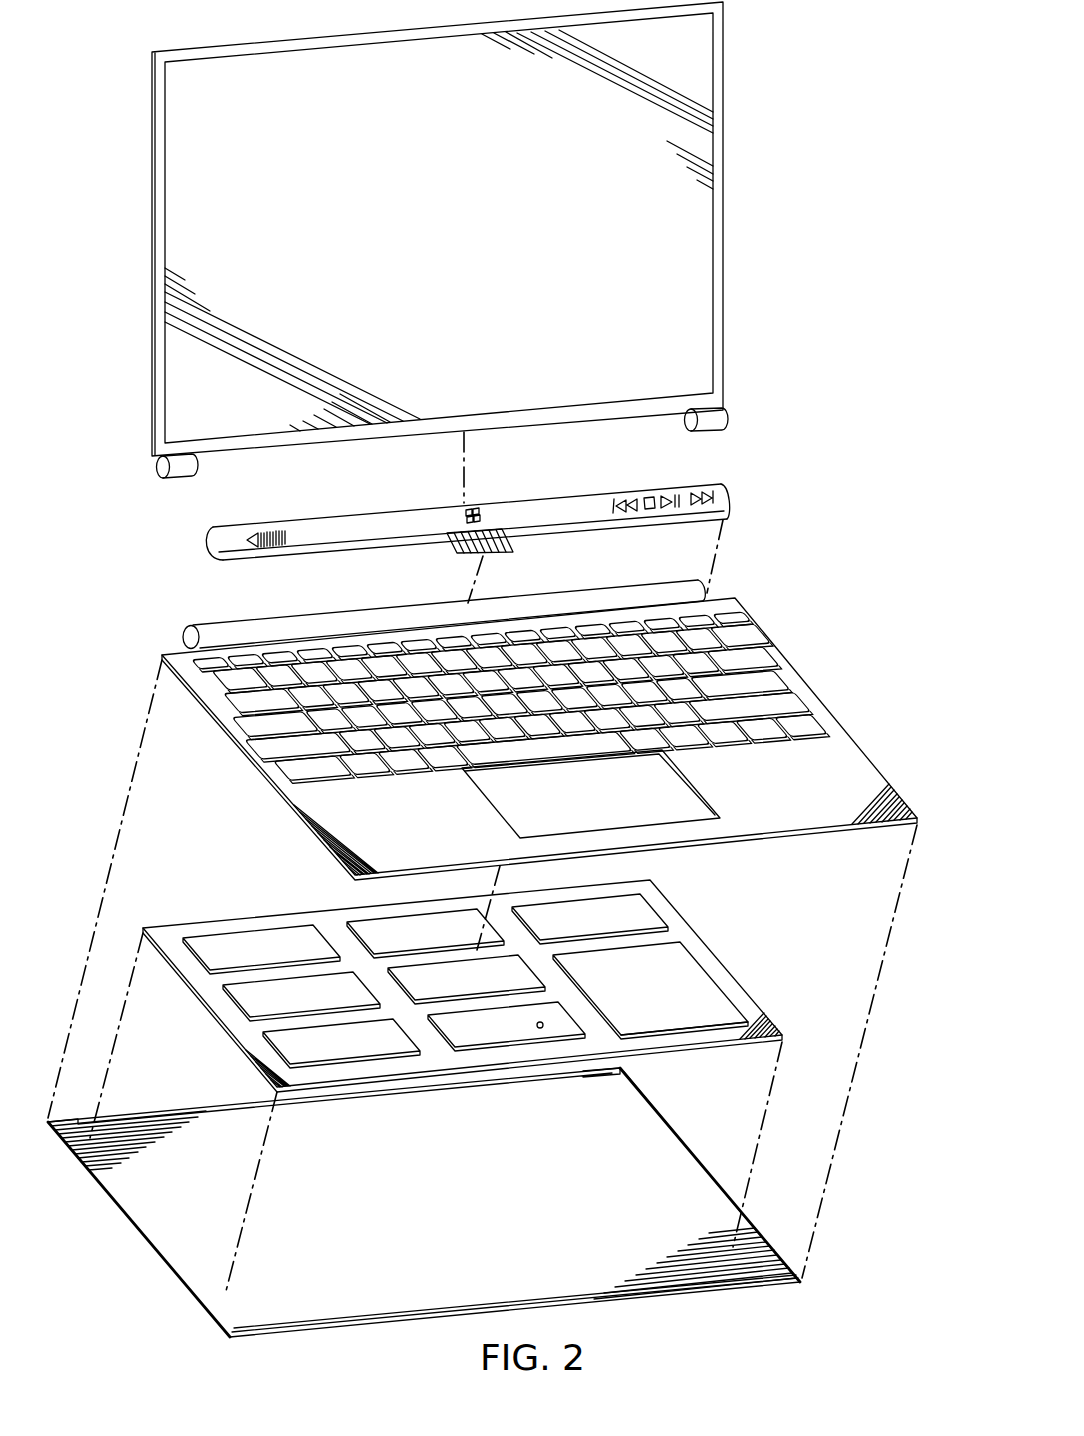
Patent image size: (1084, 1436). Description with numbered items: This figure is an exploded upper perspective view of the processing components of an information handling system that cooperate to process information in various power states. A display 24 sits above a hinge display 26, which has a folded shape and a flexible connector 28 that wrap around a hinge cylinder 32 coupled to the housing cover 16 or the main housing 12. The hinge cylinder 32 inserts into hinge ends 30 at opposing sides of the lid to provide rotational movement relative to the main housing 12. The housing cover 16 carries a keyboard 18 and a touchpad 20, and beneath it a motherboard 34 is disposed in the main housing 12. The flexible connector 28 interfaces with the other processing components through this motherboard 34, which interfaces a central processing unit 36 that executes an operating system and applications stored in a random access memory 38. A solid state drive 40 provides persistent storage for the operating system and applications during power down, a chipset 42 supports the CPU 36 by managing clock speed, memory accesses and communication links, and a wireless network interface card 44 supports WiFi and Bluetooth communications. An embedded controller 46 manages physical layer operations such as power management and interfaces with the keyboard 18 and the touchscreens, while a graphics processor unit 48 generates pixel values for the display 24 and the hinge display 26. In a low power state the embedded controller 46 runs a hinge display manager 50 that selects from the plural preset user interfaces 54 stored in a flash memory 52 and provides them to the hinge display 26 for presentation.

The main housing 12 is at (145, 1240).
The housing cover 16 is at (878, 785).
The keyboard 18 is at (795, 698).
The touchpad 20 is at (695, 808).
The display 24 is at (452, 243).
The hinge display 26 is at (727, 500).
The flexible connector 28 is at (457, 552).
The hinge ends 30 is at (760, 398).
The hinge cylinder 32 is at (687, 578).
The motherboard 34 is at (227, 925).
The central processing unit 36 is at (210, 945).
The random access memory 38 is at (248, 990).
The solid state drive 40 is at (388, 1042).
The chipset 42 is at (430, 913).
The wireless network interface card 44 is at (510, 963).
The embedded controller 46 is at (465, 1035).
The graphics processor unit 48 is at (640, 910).
The hinge display manager 50 is at (545, 1027).
The flash memory 52 is at (678, 958).
The preset user interfaces 54 is at (710, 1013).